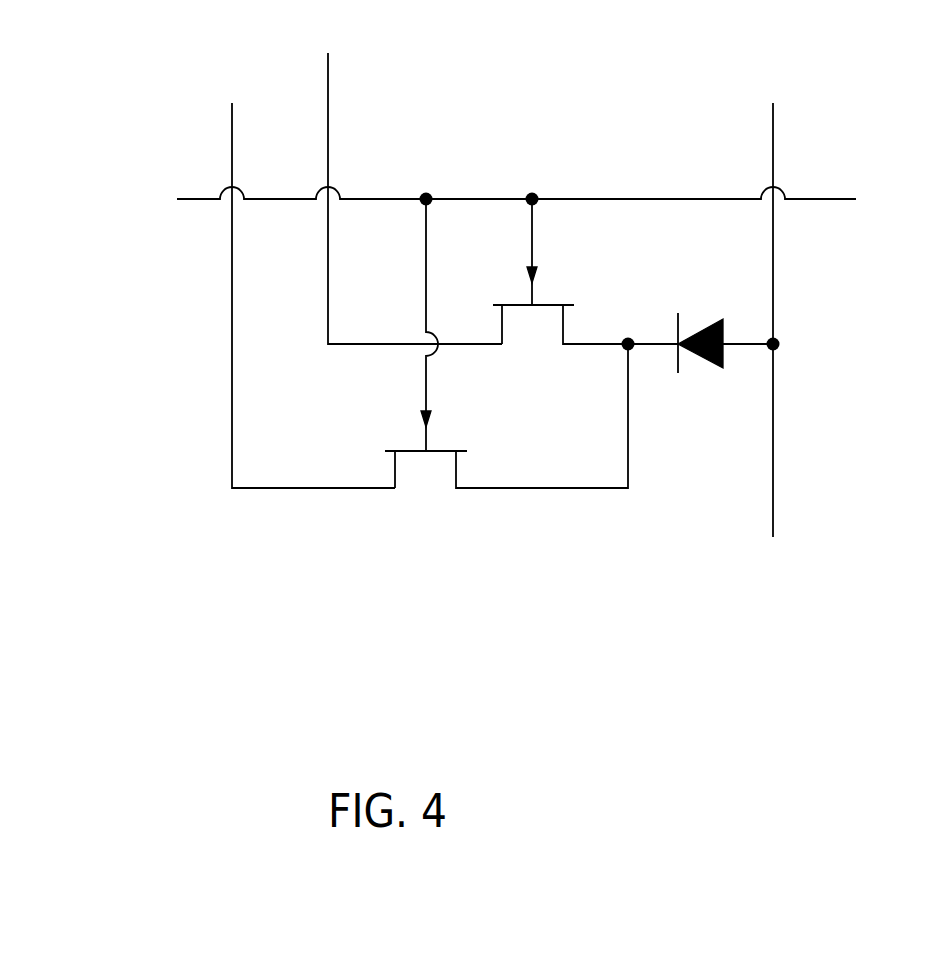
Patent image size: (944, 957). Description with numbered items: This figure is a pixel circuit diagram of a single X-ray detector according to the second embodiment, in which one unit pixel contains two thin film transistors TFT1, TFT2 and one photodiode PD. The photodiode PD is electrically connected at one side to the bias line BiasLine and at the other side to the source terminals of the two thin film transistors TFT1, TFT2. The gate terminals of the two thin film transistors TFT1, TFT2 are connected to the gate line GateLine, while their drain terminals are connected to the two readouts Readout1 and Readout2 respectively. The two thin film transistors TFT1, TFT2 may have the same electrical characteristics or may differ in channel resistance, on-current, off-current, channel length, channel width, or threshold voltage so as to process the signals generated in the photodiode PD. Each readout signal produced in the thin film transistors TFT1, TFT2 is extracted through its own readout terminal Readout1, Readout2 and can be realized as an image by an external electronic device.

The gate line GateLine is at (442, 198).
The first readout Readout1 is at (276, 275).
The second readout Readout2 is at (367, 179).
The bias line BiasLine is at (773, 300).
The first thin film transistor TFT1 is at (506, 363).
The second thin film transistor TFT2 is at (585, 290).
The photodiode PD is at (718, 321).